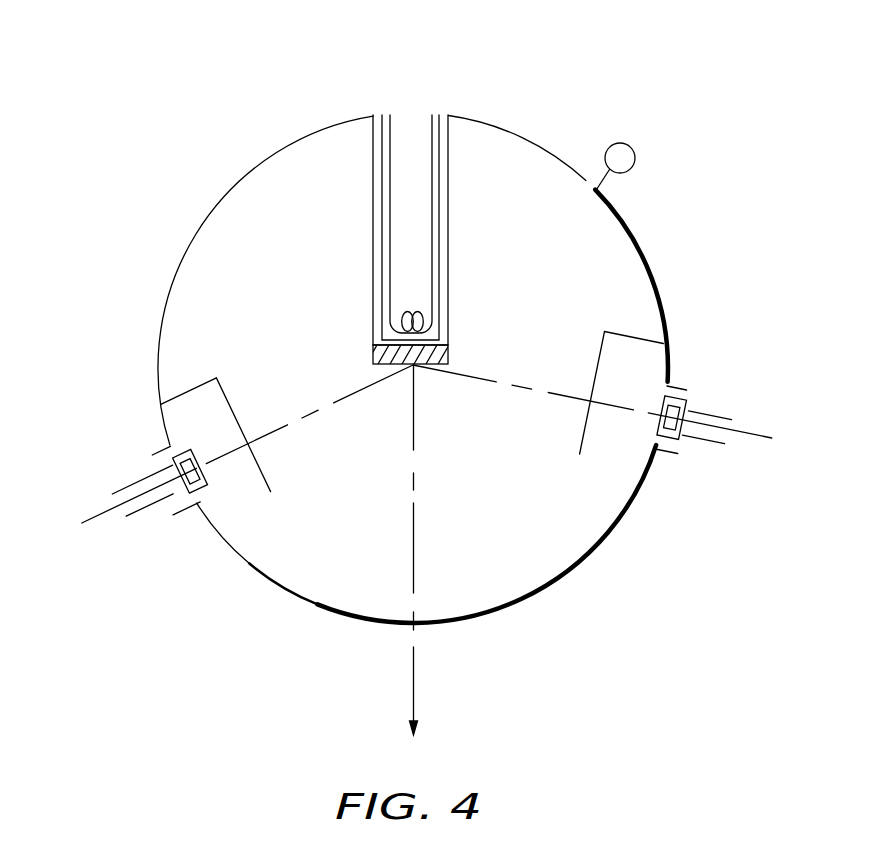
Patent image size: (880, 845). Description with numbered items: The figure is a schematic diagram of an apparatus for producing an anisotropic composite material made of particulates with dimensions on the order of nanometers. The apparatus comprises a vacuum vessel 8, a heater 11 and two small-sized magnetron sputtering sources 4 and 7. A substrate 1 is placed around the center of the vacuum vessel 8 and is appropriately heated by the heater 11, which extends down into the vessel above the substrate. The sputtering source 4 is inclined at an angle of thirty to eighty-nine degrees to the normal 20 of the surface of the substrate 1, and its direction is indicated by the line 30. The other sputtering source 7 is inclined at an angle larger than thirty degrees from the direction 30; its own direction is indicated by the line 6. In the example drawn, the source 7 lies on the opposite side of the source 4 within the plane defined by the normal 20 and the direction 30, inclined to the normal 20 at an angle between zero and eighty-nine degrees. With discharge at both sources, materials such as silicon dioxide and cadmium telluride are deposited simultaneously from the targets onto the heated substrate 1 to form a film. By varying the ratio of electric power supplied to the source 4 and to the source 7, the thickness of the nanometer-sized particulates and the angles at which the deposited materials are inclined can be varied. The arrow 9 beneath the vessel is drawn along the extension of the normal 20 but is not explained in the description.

The substrate 1 is at (448, 349).
The small-sized magnetron sputtering source 4 is at (718, 418).
The direction of the sputtering source 7 6 is at (110, 505).
The small-sized magnetron sputtering source 7 is at (150, 502).
The vacuum vessel 8 is at (642, 245).
The direction arrow 9 is at (416, 708).
The heater 11 is at (440, 242).
The normal of the surface of the substrate 20 is at (415, 478).
The direction of the sputtering source 4 30 is at (760, 437).